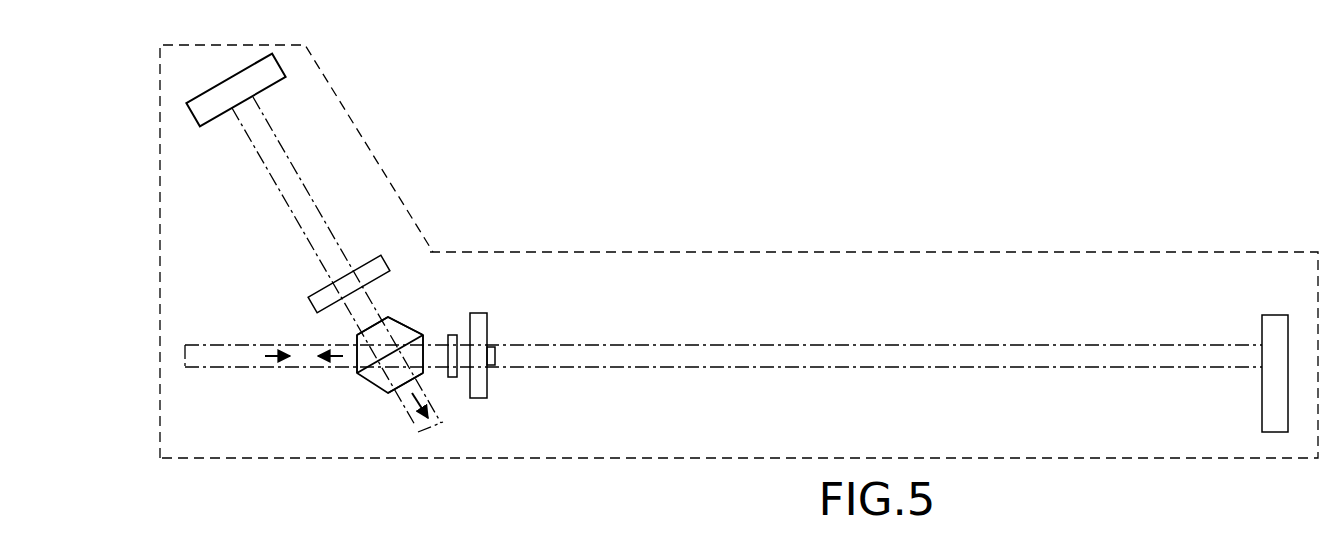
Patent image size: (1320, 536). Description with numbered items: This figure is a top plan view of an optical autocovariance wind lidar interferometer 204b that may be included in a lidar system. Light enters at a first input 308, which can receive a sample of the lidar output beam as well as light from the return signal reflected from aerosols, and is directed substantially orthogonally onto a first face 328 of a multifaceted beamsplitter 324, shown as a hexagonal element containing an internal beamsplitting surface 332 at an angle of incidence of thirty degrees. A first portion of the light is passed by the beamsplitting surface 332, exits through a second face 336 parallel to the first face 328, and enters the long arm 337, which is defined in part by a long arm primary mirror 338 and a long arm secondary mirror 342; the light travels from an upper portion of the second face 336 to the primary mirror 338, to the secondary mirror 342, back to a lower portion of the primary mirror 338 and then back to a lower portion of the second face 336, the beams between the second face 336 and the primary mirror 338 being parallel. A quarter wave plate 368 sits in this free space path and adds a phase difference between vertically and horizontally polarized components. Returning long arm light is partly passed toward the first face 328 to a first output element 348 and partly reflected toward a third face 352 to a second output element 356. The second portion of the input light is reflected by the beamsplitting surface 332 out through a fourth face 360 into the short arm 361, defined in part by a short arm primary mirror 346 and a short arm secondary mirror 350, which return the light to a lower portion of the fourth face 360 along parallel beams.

The interferometer 204b is at (606, 198).
The first input 308 is at (265, 345).
The multifaceted beamsplitter 324 is at (365, 378).
The first face 328 is at (357, 336).
The beamsplitting surface 332 is at (402, 327).
The second face 336 is at (427, 336).
The long arm 337 is at (852, 325).
The long arm primary mirror 338 is at (1268, 432).
The long arm secondary mirror 342 is at (493, 347).
The short arm primary mirror 346 is at (256, 62).
The first output element 348 is at (290, 368).
The short arm secondary mirror 350 is at (343, 277).
The third face 352 is at (393, 397).
The second output element 356 is at (428, 436).
The fourth face 360 is at (388, 315).
The short arm 361 is at (190, 191).
The quarter wave plate 368 is at (457, 340).